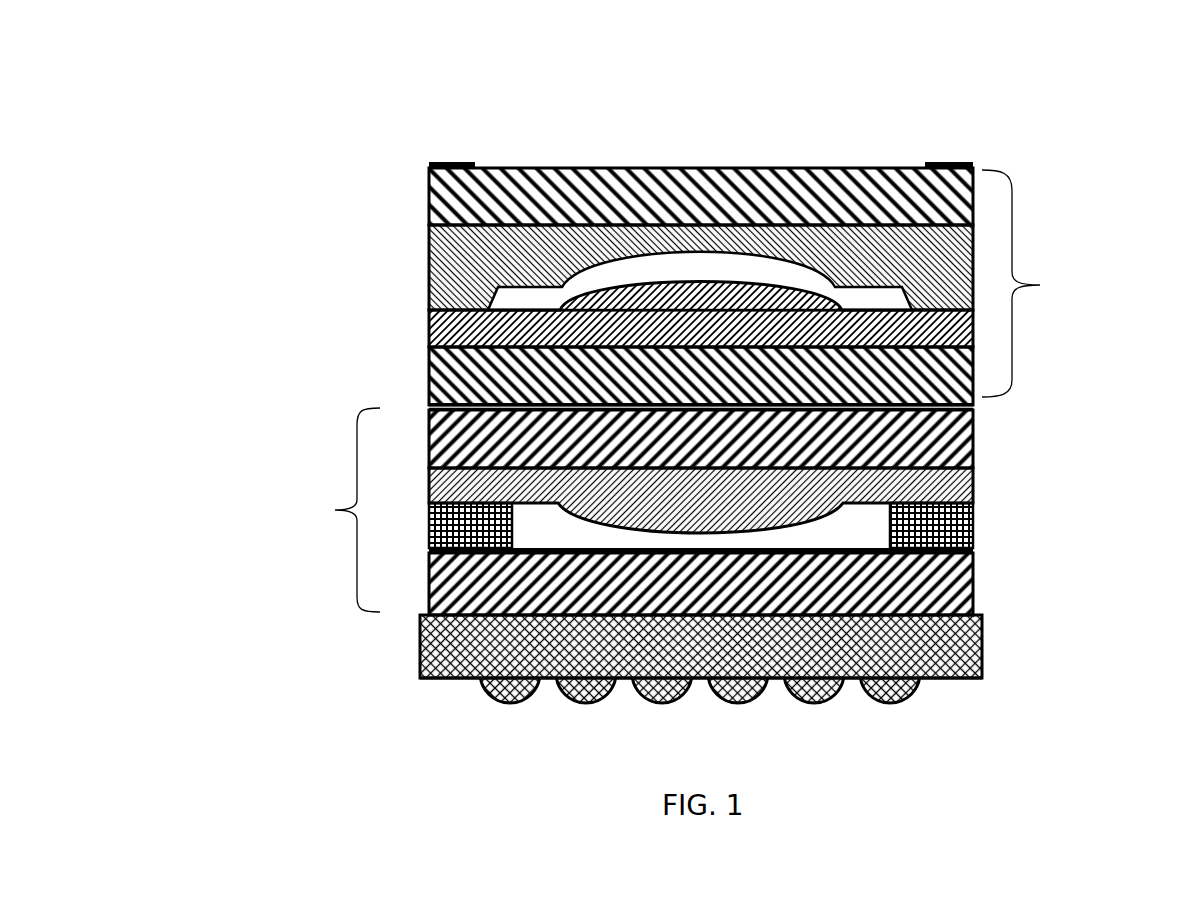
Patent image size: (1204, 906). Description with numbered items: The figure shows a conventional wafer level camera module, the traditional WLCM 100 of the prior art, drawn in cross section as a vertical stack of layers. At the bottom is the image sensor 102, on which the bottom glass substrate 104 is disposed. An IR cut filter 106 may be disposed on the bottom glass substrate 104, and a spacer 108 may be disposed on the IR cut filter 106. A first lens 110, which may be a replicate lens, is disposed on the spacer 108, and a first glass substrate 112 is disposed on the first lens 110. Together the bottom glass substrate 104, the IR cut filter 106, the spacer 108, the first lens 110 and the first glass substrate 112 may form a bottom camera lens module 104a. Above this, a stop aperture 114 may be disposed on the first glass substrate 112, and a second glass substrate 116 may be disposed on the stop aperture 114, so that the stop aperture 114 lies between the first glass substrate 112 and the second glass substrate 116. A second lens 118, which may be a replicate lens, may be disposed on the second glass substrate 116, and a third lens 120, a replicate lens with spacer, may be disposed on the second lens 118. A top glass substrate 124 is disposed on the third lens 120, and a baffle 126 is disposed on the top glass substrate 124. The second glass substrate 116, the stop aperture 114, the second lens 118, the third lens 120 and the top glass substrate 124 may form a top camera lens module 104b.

The WLCM 100 is at (412, 96).
The image sensor 102 is at (982, 650).
The bottom glass substrate 104 is at (973, 600).
The bottom camera lens module 104a is at (312, 510).
The top camera lens module 104b is at (1071, 283).
The IR cut filter 106 is at (973, 553).
The spacer 108 is at (973, 522).
The first lens 110 is at (973, 475).
The first glass substrate 112 is at (973, 432).
The stop aperture 114 is at (973, 407).
The second glass substrate 116 is at (429, 380).
The second lens 118 is at (429, 338).
The third lens 120 is at (429, 268).
The top glass substrate 124 is at (429, 197).
The baffle 126 is at (955, 160).